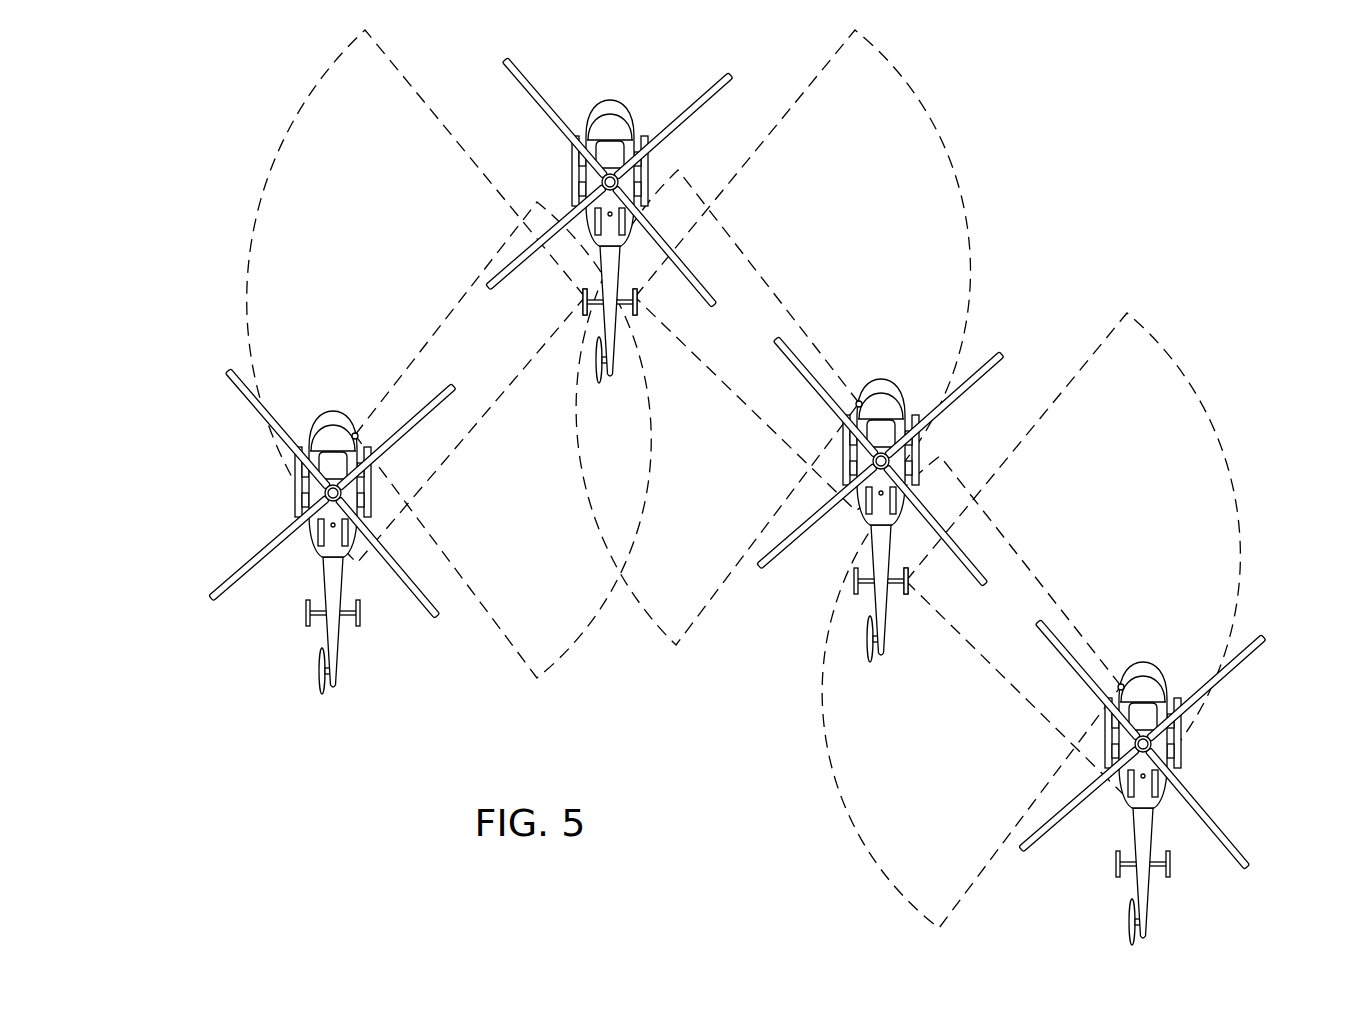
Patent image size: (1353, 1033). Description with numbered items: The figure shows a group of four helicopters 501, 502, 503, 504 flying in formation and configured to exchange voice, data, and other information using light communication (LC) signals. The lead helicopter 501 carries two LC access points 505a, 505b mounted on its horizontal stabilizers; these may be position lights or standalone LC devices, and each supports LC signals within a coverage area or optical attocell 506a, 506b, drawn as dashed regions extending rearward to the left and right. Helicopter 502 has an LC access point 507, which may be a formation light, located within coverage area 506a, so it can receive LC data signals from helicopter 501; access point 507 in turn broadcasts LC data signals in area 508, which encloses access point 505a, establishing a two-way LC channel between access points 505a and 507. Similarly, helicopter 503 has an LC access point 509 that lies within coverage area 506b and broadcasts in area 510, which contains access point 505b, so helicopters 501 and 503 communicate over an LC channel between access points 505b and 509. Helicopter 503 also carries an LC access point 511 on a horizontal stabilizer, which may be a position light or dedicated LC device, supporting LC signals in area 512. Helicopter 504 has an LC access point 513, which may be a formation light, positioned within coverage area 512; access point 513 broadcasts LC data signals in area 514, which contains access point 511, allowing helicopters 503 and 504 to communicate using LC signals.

The lead helicopter 501 is at (610, 98).
The helicopter 502 is at (327, 410).
The helicopter 503 is at (885, 378).
The helicopter 504 is at (1147, 660).
The LC access point 505a is at (582, 303).
The LC access point 505b is at (640, 303).
The coverage area 506a is at (257, 210).
The coverage area 506b is at (966, 210).
The LC access point 507 is at (360, 430).
The coverage area 508 is at (572, 650).
The LC access point 509 is at (858, 400).
The coverage area 510 is at (713, 600).
The LC access point 511 is at (915, 586).
The coverage area 512 is at (1231, 468).
The LC access point 513 is at (1119, 683).
The coverage area 514 is at (866, 852).